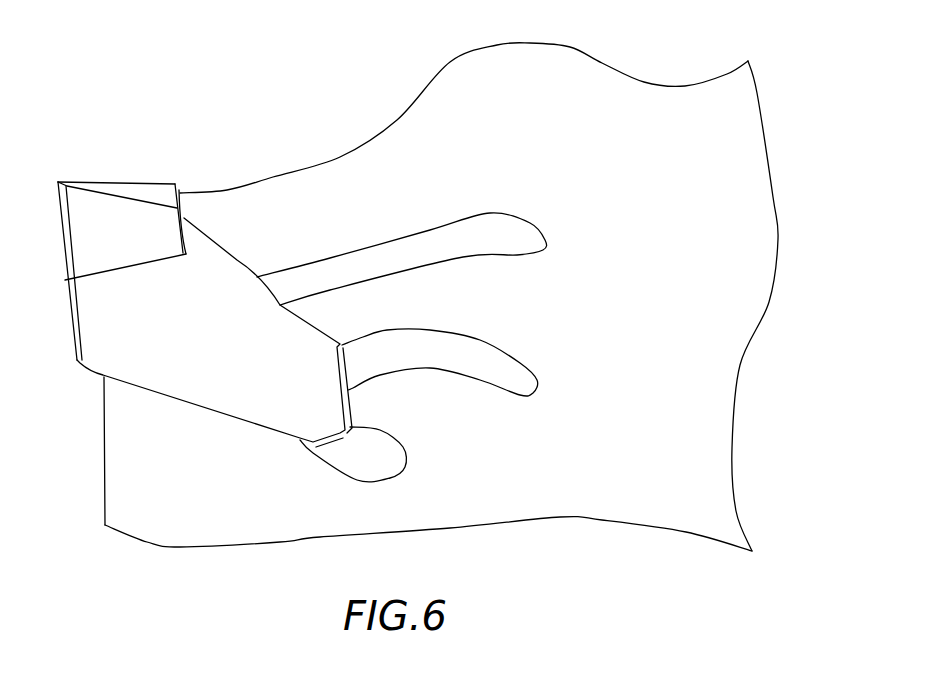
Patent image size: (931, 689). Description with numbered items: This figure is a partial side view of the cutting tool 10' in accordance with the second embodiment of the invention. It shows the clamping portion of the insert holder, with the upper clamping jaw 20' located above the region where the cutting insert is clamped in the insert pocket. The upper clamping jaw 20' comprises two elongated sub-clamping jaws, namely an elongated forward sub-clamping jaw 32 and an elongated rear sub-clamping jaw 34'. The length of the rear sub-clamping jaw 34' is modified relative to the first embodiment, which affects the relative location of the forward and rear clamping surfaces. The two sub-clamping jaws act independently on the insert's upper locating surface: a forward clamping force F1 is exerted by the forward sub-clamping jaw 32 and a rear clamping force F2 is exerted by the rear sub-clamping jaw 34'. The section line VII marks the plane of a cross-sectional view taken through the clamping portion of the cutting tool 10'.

The cutting tool 10' is at (122, 140).
The upper clamping jaw 20' is at (205, 264).
The forward sub-clamping jaw 32 is at (350, 187).
The rear sub-clamping jaw 34' is at (402, 268).
The forward clamping force F1 is at (218, 248).
The rear clamping force F2 is at (307, 327).
The section line VII- VII is at (212, 232).